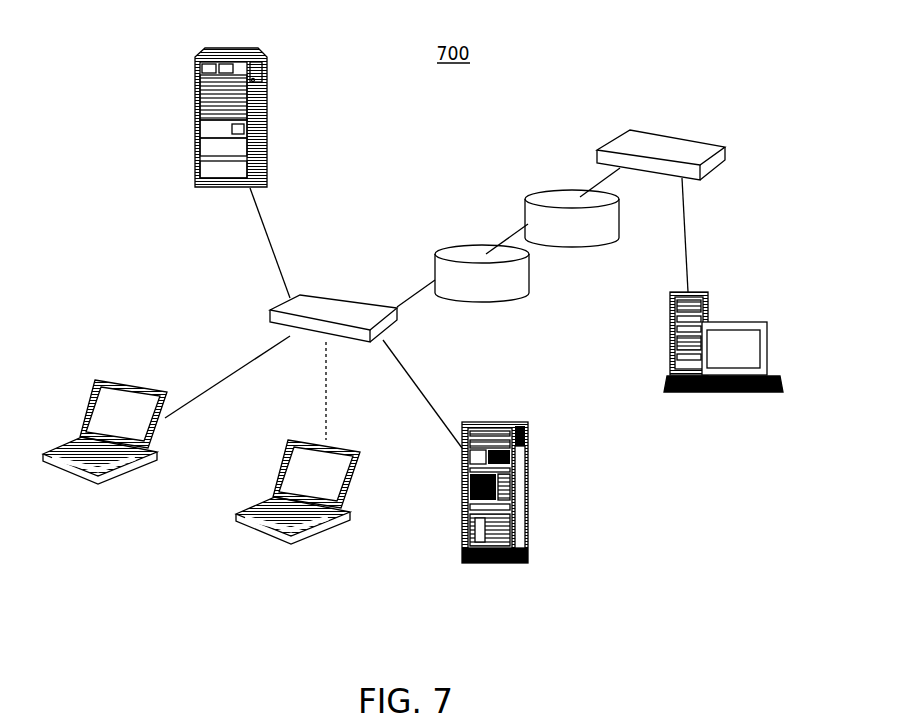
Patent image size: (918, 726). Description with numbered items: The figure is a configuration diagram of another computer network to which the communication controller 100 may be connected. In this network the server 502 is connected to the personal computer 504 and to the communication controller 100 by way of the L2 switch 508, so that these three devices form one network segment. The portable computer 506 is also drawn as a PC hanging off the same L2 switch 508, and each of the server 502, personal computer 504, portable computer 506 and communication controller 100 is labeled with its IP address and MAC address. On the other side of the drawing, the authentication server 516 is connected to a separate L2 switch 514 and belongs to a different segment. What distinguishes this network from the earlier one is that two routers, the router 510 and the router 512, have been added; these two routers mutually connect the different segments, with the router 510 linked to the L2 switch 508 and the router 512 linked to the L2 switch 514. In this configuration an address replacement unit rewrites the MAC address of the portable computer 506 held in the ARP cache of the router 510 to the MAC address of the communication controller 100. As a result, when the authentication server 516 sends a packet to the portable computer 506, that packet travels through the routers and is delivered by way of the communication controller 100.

The communication controller 100 is at (529, 490).
The server 502 is at (268, 128).
The personal computer 504 is at (124, 383).
The portable computer 506 is at (286, 458).
The L2 switch 508 is at (270, 309).
The router 510 is at (448, 250).
The router 512 is at (550, 192).
The L2 switch 514 is at (616, 135).
The authentication server 516 is at (670, 318).